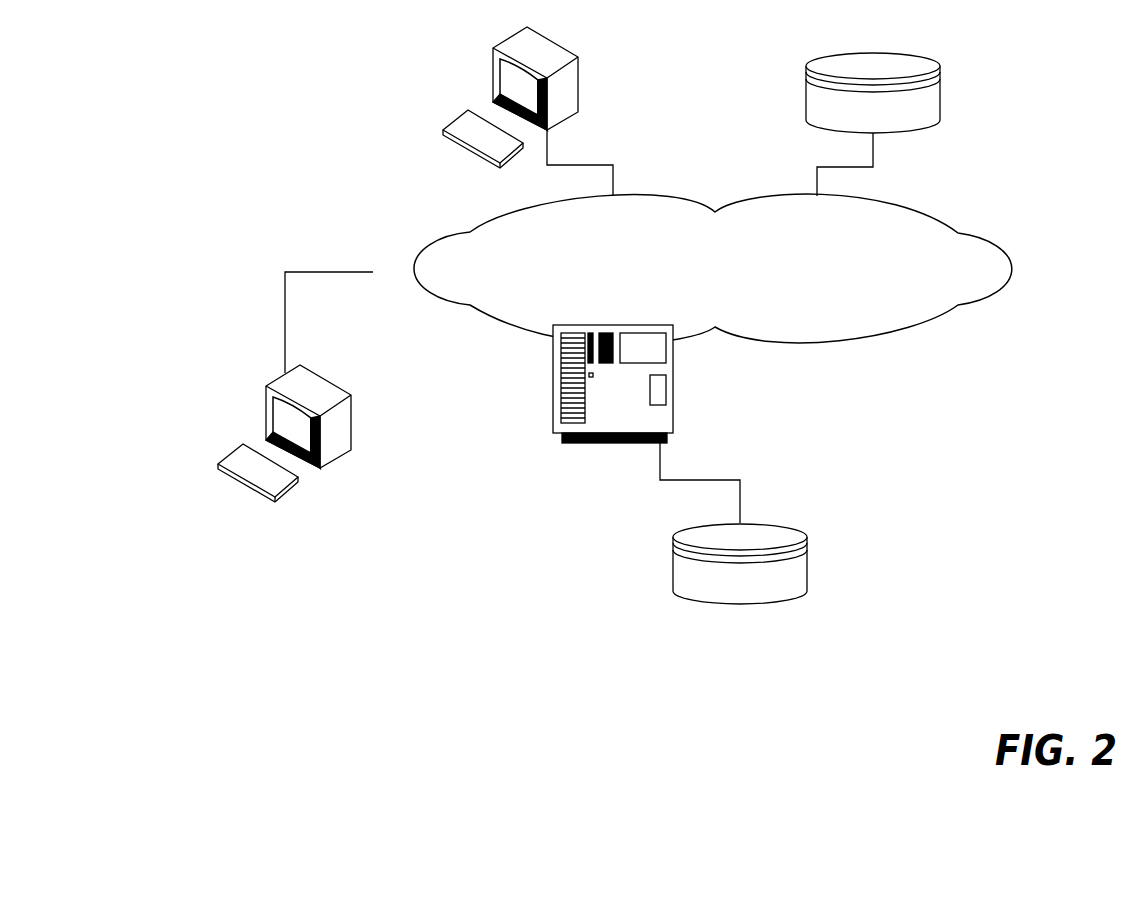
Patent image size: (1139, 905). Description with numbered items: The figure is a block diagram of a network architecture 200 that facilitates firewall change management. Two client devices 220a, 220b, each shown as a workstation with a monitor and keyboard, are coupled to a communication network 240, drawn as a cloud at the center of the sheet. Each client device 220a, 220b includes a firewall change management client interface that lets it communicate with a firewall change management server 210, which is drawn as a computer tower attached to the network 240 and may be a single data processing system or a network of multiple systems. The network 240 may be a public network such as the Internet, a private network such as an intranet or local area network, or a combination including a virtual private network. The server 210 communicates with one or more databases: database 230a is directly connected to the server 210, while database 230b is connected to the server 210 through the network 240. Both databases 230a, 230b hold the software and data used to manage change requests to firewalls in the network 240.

The network architecture 200 is at (372, 165).
The firewall change management server 210 is at (660, 384).
The client device 220a is at (338, 433).
The client device 220b is at (565, 97).
The database 230a is at (794, 564).
The database 230b is at (927, 93).
The communication network 240 is at (735, 297).